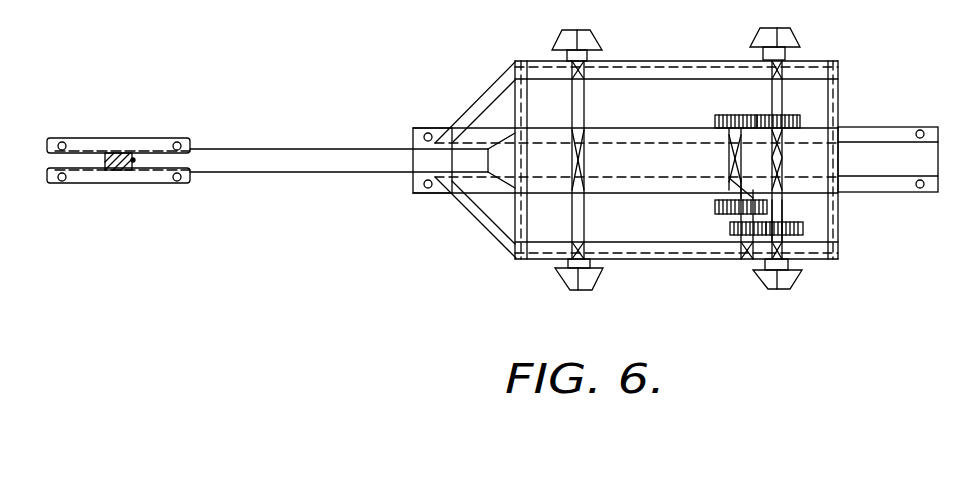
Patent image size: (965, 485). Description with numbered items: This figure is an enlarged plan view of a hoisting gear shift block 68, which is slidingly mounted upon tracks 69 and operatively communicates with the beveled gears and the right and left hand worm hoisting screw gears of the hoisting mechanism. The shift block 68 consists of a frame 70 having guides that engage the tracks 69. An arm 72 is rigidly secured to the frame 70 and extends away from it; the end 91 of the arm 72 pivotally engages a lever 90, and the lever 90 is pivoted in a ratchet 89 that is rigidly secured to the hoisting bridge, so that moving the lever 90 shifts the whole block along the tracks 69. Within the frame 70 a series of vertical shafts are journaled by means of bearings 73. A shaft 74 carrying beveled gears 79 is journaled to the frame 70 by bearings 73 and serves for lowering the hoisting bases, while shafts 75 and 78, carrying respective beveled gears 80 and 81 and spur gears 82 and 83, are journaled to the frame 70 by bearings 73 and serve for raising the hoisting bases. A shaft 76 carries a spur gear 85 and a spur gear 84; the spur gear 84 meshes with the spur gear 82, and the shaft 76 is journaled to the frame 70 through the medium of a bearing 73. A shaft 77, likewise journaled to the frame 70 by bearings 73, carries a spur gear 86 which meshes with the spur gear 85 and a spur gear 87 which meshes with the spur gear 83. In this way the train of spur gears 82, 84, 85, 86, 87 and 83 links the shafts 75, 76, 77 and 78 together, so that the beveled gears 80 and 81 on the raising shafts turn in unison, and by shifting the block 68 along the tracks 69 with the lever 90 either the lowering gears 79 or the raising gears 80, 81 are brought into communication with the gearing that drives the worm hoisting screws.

The hoisting gear shift block 68 is at (440, 212).
The tracks 69 is at (874, 148).
The frame 70 is at (542, 251).
The arm 72 is at (251, 172).
The bearing 73 is at (781, 70).
The shaft 74 is at (586, 100).
The shaft 75 is at (784, 95).
The shaft 76 is at (737, 193).
The shaft 77 is at (745, 214).
The shaft 78 is at (779, 217).
The beveled gear 79 is at (590, 37).
The beveled gear 80 is at (789, 38).
The beveled gear 81 is at (790, 289).
The spur gear 82 is at (801, 118).
The spur gear 83 is at (804, 231).
The spur gear 84 is at (733, 113).
The spur gear 85 is at (735, 197).
The spur gear 86 is at (768, 206).
The spur gear 87 is at (737, 237).
The ratchet 89 is at (95, 175).
The lever 90 is at (103, 156).
The end 91 is at (126, 173).